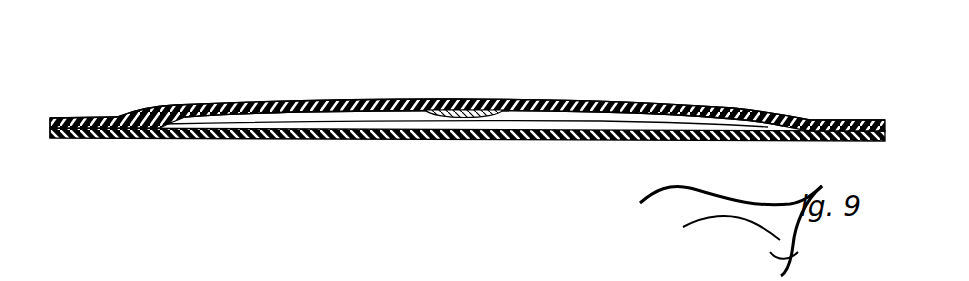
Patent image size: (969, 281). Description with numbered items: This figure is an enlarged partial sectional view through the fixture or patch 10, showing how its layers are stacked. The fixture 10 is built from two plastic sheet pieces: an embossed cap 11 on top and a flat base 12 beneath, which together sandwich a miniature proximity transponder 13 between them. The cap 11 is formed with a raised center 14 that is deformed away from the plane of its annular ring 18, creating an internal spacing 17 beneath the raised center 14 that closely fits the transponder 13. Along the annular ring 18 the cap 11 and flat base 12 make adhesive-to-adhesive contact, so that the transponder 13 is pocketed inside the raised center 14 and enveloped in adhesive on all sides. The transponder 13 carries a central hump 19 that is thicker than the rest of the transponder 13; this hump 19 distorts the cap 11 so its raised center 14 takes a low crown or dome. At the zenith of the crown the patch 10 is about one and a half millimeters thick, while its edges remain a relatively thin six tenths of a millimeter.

The fixture 10 is at (467, 111).
The embossed cap 11 is at (580, 101).
The flat base 12 is at (711, 141).
The miniature proximity transponder 13 is at (367, 125).
The raised center 14 is at (467, 109).
The internal spacing 17 is at (605, 119).
The annular ring 18 is at (98, 118).
The central hump 19 is at (448, 100).